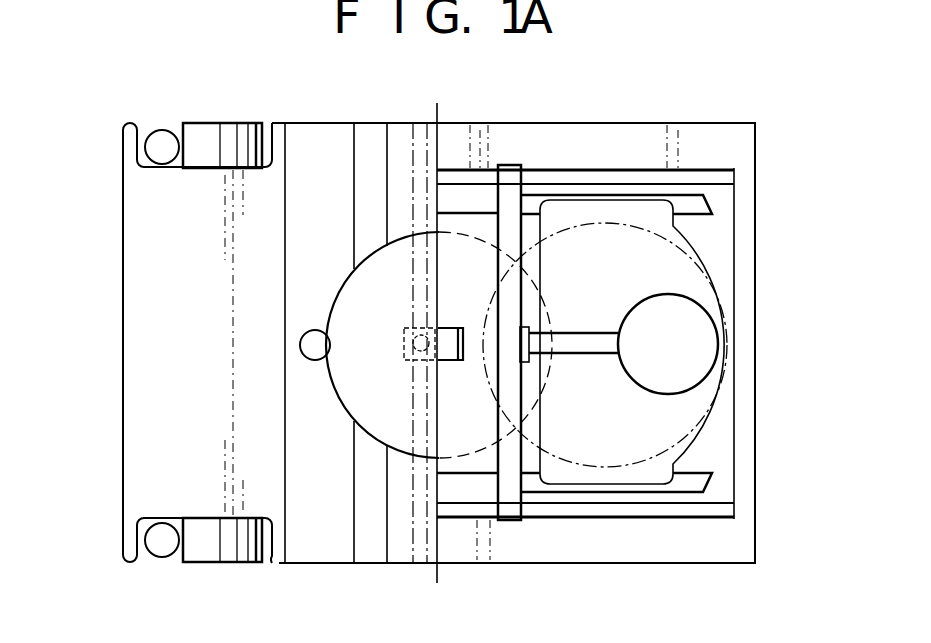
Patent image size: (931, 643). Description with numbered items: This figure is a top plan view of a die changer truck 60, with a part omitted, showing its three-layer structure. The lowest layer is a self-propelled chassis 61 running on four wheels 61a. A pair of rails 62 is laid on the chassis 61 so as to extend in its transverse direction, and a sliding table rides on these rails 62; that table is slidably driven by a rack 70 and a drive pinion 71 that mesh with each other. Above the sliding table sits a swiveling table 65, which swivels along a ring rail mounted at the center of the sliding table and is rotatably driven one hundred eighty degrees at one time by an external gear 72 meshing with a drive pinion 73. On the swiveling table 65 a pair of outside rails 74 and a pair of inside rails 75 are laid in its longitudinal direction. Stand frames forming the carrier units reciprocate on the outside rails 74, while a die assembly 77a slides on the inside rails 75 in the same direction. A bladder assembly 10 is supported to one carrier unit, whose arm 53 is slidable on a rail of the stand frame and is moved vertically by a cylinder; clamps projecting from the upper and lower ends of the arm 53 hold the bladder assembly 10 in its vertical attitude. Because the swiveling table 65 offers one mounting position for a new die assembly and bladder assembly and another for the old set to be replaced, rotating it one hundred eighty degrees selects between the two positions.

The bladder assembly 10 is at (703, 342).
The arm 53 is at (581, 334).
The die changer truck 60 is at (518, 118).
The self-propelled chassis 61 is at (123, 472).
The wheels 61a is at (202, 131).
The rails 62 is at (360, 528).
The swiveling table 65 is at (726, 447).
The rack 70 is at (413, 361).
The drive pinion 71 is at (414, 333).
The external gear 72 is at (345, 286).
The drive pinion 73 is at (313, 362).
The outside rails 74 is at (715, 185).
The inside rails 75 is at (700, 215).
The die assembly 77a is at (703, 430).